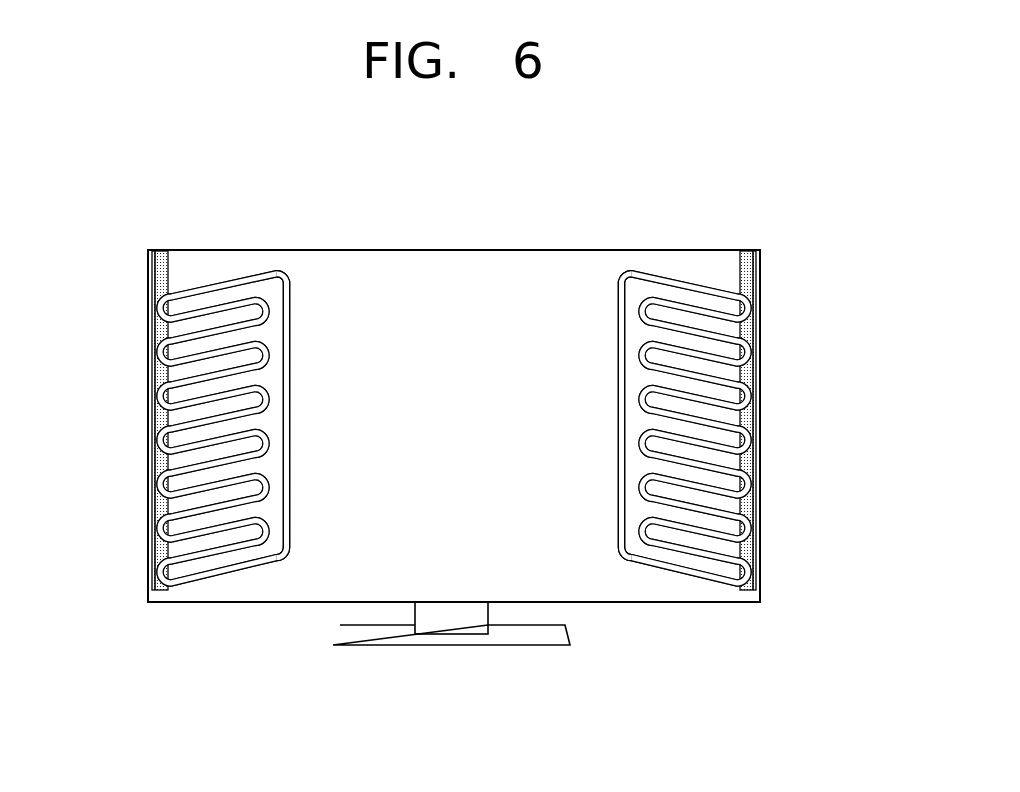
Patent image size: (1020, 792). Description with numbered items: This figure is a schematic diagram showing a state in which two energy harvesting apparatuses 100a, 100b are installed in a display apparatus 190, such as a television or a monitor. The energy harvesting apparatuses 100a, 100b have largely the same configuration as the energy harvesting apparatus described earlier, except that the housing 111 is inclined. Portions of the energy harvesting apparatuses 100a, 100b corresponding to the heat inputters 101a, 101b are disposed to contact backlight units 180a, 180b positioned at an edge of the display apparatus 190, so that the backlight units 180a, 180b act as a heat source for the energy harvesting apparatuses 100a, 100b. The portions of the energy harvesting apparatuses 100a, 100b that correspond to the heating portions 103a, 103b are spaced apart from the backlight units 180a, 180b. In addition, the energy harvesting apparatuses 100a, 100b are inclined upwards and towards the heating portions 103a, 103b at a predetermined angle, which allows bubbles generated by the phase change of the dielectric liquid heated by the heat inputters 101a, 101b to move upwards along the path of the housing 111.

The display apparatus 190 is at (463, 249).
The energy harvesting apparatus 100a is at (229, 281).
The energy harvesting apparatus 100b is at (679, 281).
The heat inputter 101a is at (157, 487).
The heat inputter 101b is at (752, 440).
The heating portion 103a is at (290, 297).
The heating portion 103b is at (618, 297).
The housing 111 is at (210, 306).
The backlight unit 180a is at (148, 603).
The backlight unit 180b is at (760, 603).